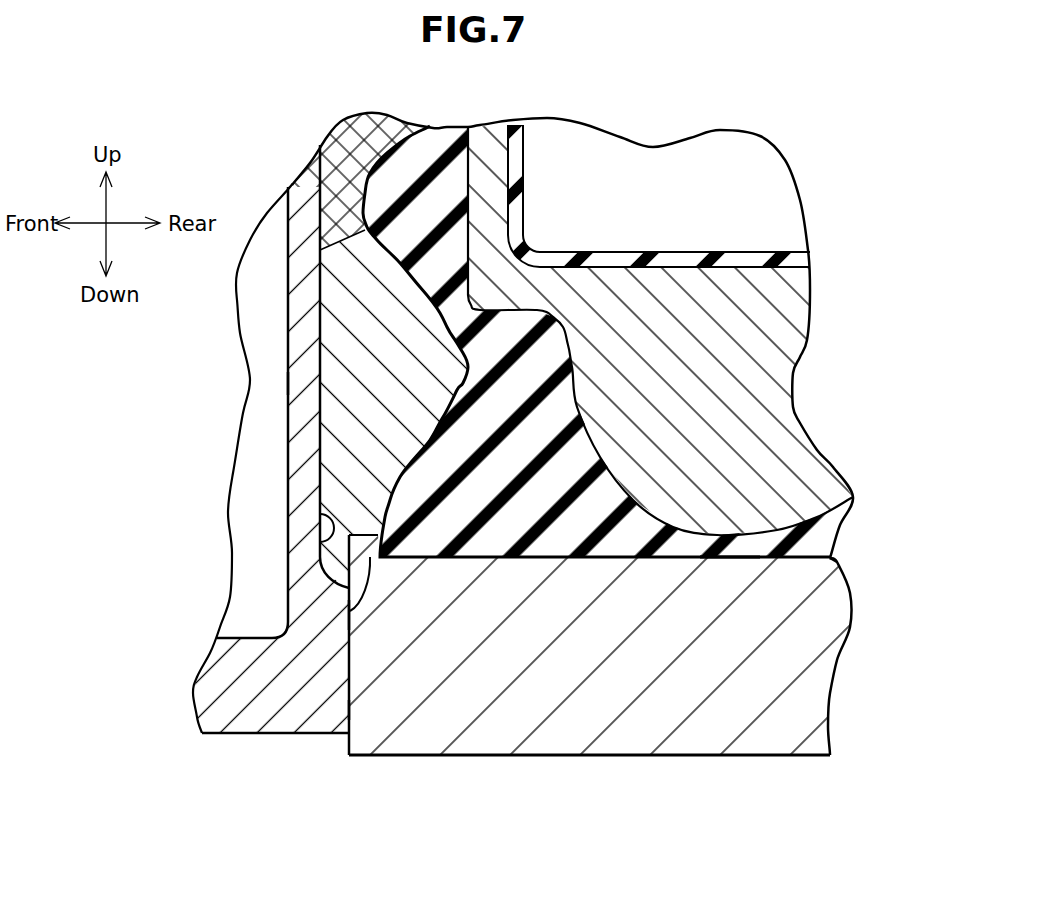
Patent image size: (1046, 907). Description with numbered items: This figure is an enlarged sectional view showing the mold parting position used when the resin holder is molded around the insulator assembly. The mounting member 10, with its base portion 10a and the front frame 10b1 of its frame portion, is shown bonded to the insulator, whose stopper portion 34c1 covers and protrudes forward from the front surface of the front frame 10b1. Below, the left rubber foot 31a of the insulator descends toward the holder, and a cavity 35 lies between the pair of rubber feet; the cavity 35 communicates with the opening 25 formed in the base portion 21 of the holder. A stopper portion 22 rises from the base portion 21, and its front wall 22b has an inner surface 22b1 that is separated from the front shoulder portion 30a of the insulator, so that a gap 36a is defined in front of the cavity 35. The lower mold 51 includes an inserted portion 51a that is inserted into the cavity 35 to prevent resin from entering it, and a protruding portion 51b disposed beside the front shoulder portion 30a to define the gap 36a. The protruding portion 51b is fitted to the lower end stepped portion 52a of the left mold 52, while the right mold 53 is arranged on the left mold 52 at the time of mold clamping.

The mounting member 10 is at (787, 300).
The base portion 10a is at (757, 457).
The front frame 10b1 is at (488, 182).
The base portion 21 is at (290, 717).
The stopper portion 22 is at (288, 383).
The front wall 22b is at (360, 320).
The inner surface 22b1 is at (317, 540).
The opening 25 is at (356, 710).
The front shoulder portion 30a is at (325, 458).
The rubber foot 31a is at (440, 418).
The stopper portion 34c1 is at (390, 150).
The cavity 35 is at (725, 637).
The gap 36a is at (348, 527).
The lower mold 51 is at (693, 733).
The inserted portion 51a is at (822, 605).
The protruding portion 51b is at (343, 613).
The left mold 52 is at (292, 340).
The lower end stepped portion 52a is at (367, 565).
The right mold 53 is at (367, 153).